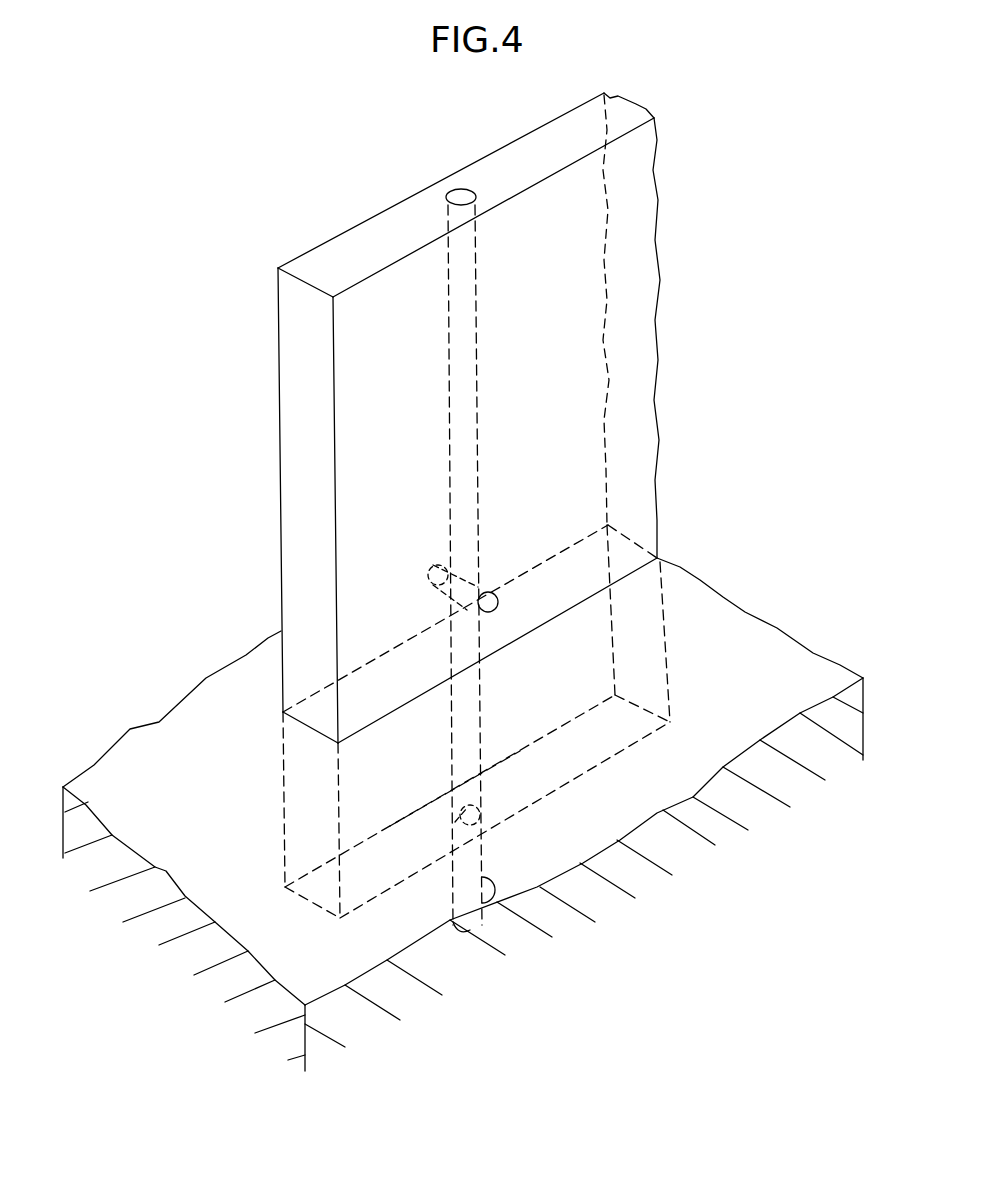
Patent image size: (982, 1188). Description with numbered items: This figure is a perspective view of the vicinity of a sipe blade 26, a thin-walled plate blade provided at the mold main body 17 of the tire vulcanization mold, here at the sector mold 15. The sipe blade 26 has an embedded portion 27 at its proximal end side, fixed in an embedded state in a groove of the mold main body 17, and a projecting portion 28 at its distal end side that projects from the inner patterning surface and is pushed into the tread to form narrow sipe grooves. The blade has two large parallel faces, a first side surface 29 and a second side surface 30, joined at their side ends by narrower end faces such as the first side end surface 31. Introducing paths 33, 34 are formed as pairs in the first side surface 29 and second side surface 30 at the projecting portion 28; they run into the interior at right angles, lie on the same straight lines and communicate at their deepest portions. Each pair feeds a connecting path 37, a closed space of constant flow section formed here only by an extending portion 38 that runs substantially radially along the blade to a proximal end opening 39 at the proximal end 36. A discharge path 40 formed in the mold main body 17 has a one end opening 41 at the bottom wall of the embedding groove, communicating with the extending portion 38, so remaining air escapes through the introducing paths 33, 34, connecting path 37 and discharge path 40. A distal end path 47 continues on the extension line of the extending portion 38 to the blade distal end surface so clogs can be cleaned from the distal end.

The sector mold 15 is at (723, 597).
The mold main body 17 is at (777, 628).
The sipe blade 26 is at (435, 418).
The embedded portion 27 is at (283, 803).
The projecting portion 28 is at (303, 493).
The first side surface 29 is at (629, 309).
The second side surface 30 is at (310, 250).
The first side end surface 31 is at (297, 565).
The introducing path 33 is at (498, 600).
The introducing path 34 is at (430, 573).
The proximal end 36 is at (373, 900).
The connecting path 37 is at (483, 725).
The extending portion 38 is at (443, 750).
The proximal end opening 39 is at (457, 835).
The discharge path 40 is at (493, 905).
The one end opening 41 is at (482, 798).
The distal end path 47 is at (513, 437).